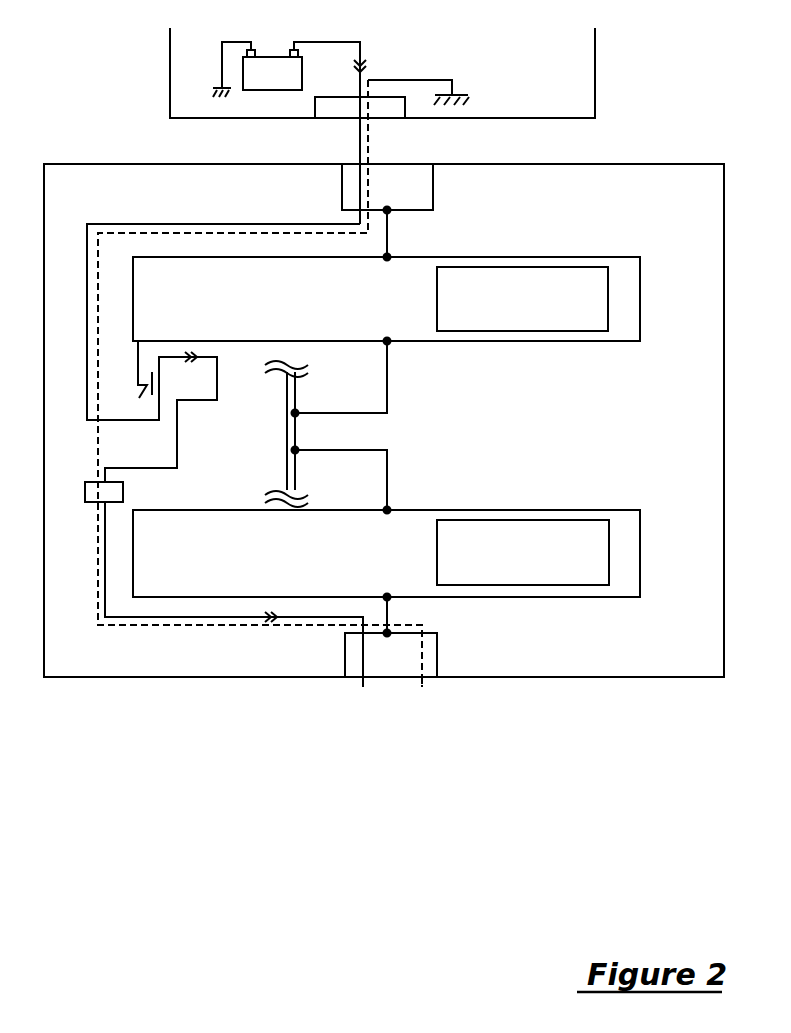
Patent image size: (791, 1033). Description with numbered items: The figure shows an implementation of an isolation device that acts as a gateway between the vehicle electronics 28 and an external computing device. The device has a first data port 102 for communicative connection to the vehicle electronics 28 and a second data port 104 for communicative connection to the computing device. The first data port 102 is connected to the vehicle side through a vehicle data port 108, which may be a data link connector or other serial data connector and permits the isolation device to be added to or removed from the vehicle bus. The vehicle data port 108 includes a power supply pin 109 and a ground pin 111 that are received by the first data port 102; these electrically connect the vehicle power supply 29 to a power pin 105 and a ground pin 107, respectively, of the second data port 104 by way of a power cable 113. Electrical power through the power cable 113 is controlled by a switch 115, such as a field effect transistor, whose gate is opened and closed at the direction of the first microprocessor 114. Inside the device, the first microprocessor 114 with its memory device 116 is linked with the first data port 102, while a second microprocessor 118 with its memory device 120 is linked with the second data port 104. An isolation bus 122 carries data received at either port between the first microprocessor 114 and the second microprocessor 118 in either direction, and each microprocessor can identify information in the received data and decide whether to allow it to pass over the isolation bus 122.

The vehicle electronics 28 is at (200, 111).
The vehicle power supply 29 is at (302, 76).
The first data port 102 is at (433, 187).
The second data port 104 is at (437, 658).
The power pin 105 is at (360, 684).
The ground pin 107 is at (425, 683).
The vehicle data port 108 is at (363, 90).
The power supply pin 109 is at (358, 104).
The ground pin 111 is at (368, 105).
The power cable 113 is at (85, 493).
The first microprocessor 114 is at (196, 310).
The switch 115 is at (140, 397).
The memory device 116 is at (504, 310).
The second microprocessor 118 is at (173, 560).
The memory device 120 is at (504, 560).
The isolation bus 122 is at (285, 432).